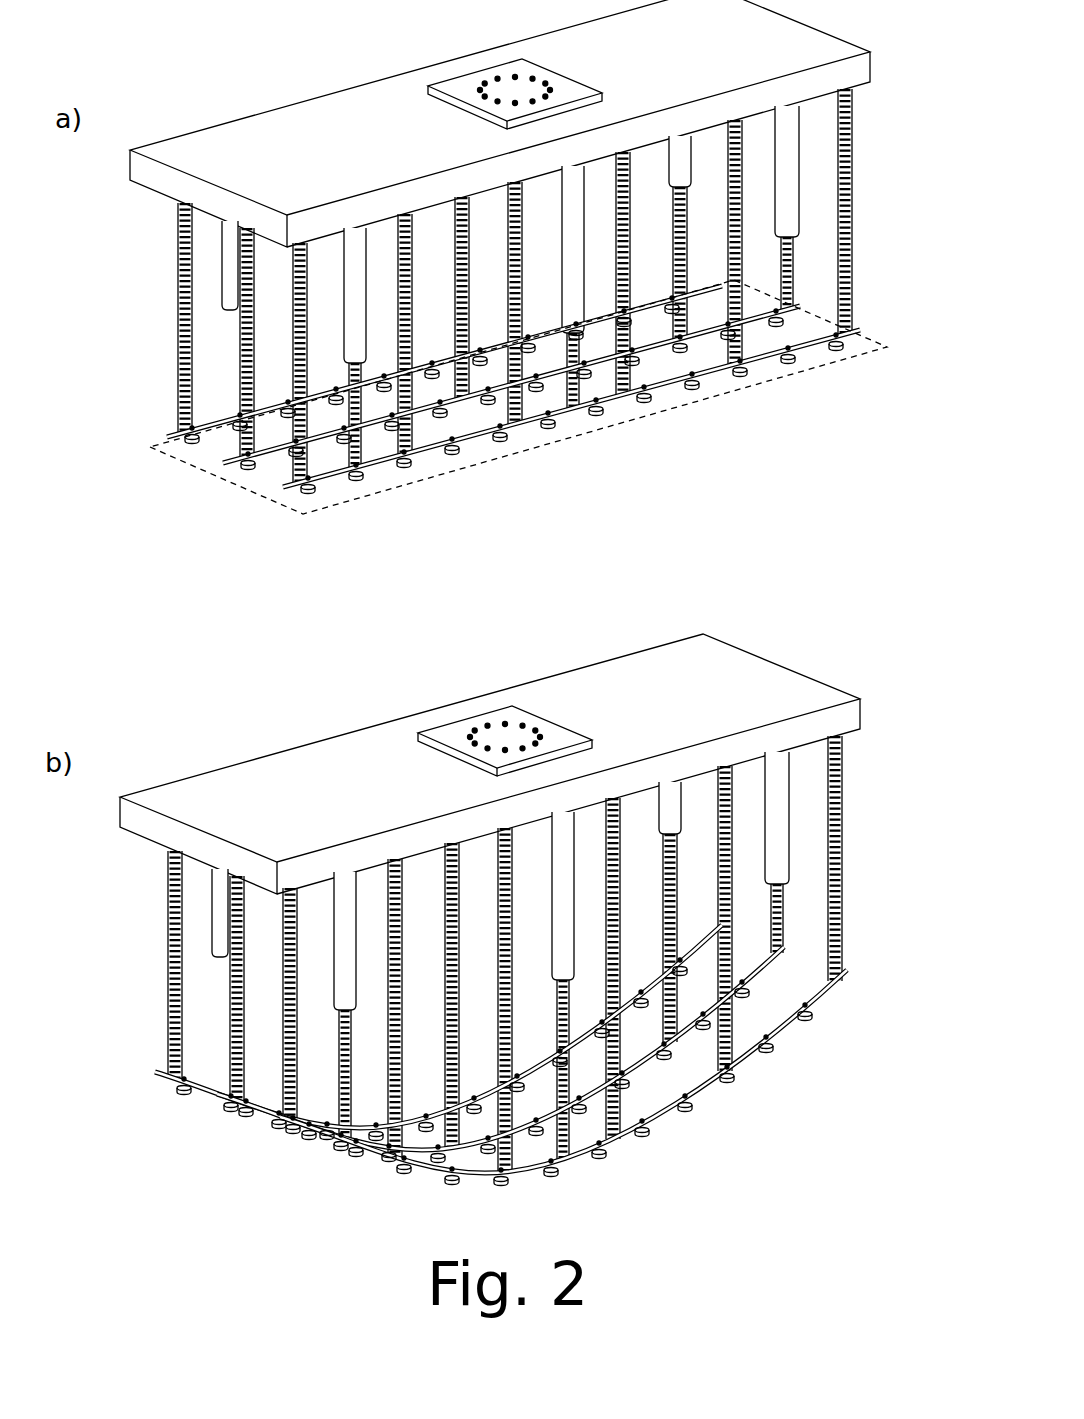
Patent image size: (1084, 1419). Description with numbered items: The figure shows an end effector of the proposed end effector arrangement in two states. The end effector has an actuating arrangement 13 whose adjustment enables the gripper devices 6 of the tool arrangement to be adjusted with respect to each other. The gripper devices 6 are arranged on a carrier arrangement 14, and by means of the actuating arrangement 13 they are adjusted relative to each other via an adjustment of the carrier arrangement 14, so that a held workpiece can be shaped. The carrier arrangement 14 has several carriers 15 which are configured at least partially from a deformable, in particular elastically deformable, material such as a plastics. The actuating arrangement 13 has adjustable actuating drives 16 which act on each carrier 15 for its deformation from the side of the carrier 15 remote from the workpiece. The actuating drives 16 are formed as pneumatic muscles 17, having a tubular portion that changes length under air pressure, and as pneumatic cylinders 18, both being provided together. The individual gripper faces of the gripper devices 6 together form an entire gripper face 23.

The actuating arrangement 13 is at (138, 262).
The carrier arrangement 14 is at (455, 788).
The carrier 15 is at (283, 490).
The gripper device 6 is at (412, 500).
The actuating drive 16 is at (559, 630).
The pneumatic muscle 17 is at (855, 287).
The pneumatic cylinder 18 is at (803, 232).
The entire gripper face 23 is at (781, 368).